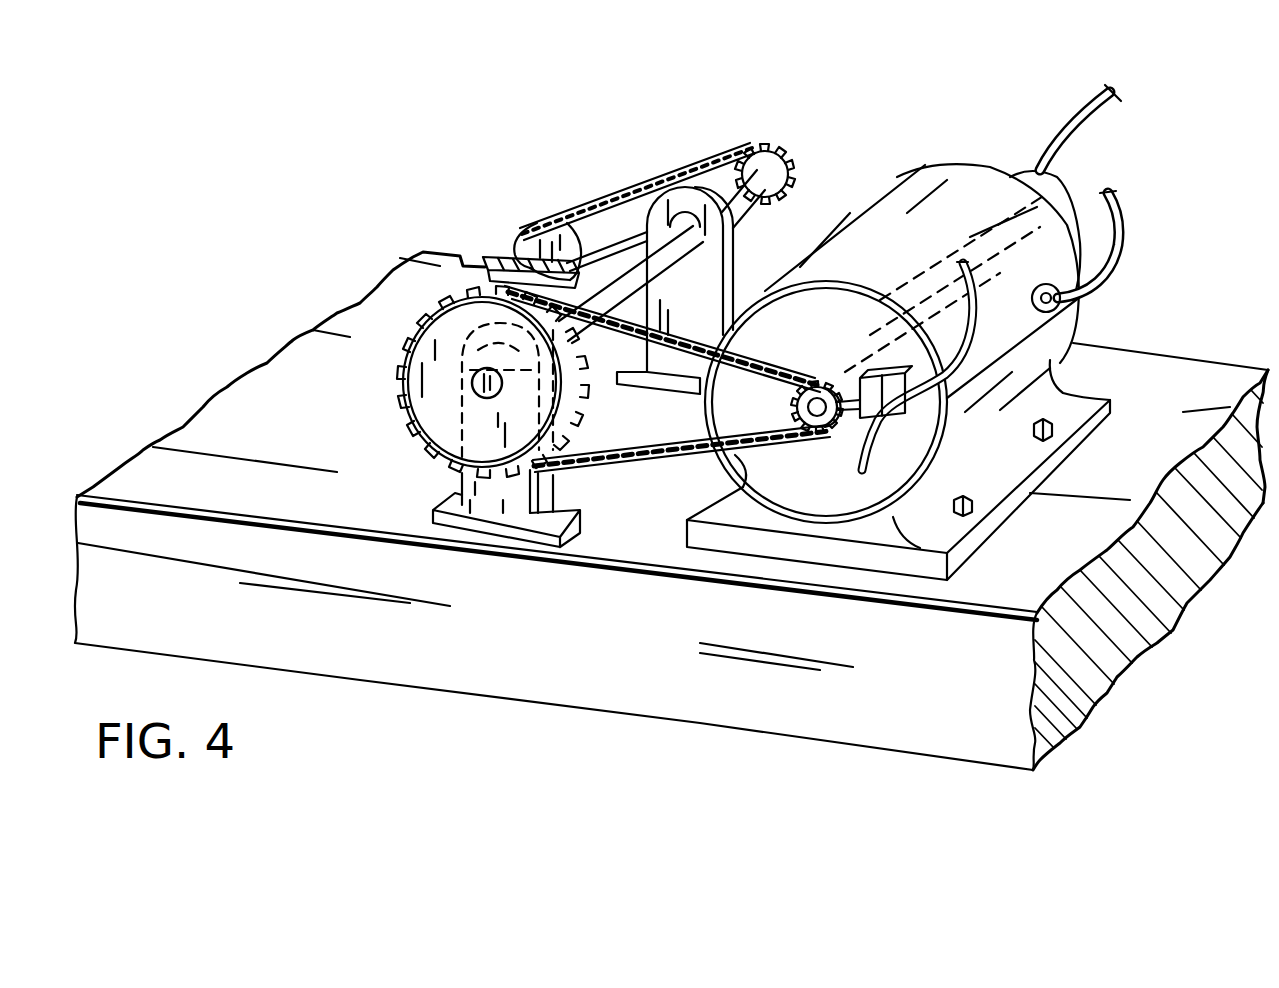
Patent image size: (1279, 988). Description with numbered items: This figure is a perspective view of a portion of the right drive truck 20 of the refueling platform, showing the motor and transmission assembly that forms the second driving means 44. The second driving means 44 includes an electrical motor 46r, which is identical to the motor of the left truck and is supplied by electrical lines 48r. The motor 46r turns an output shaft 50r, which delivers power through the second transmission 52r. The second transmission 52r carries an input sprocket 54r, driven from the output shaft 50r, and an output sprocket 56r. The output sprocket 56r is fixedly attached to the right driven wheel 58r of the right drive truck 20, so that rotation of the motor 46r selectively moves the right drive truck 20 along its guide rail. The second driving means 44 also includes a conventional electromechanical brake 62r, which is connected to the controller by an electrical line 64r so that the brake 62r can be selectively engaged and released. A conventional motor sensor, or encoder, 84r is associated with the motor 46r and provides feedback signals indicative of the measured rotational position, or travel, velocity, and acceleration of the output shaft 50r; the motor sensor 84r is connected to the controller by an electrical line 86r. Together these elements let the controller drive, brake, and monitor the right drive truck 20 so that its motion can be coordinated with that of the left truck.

The right drive truck 20 is at (1188, 352).
The second driving means 44 is at (893, 126).
The electrical motor 46r is at (958, 174).
The electrical lines 48r is at (1120, 210).
The output shaft 50r is at (943, 288).
The second transmission 52r is at (623, 472).
The input sprocket 54r is at (792, 400).
The output sprocket 56r is at (581, 235).
The right driven wheel 58r is at (495, 260).
The electromechanical brake 62r is at (1068, 197).
The electrical line 64r is at (1090, 123).
The motor sensor 84r is at (880, 418).
The electrical line 86r is at (975, 328).